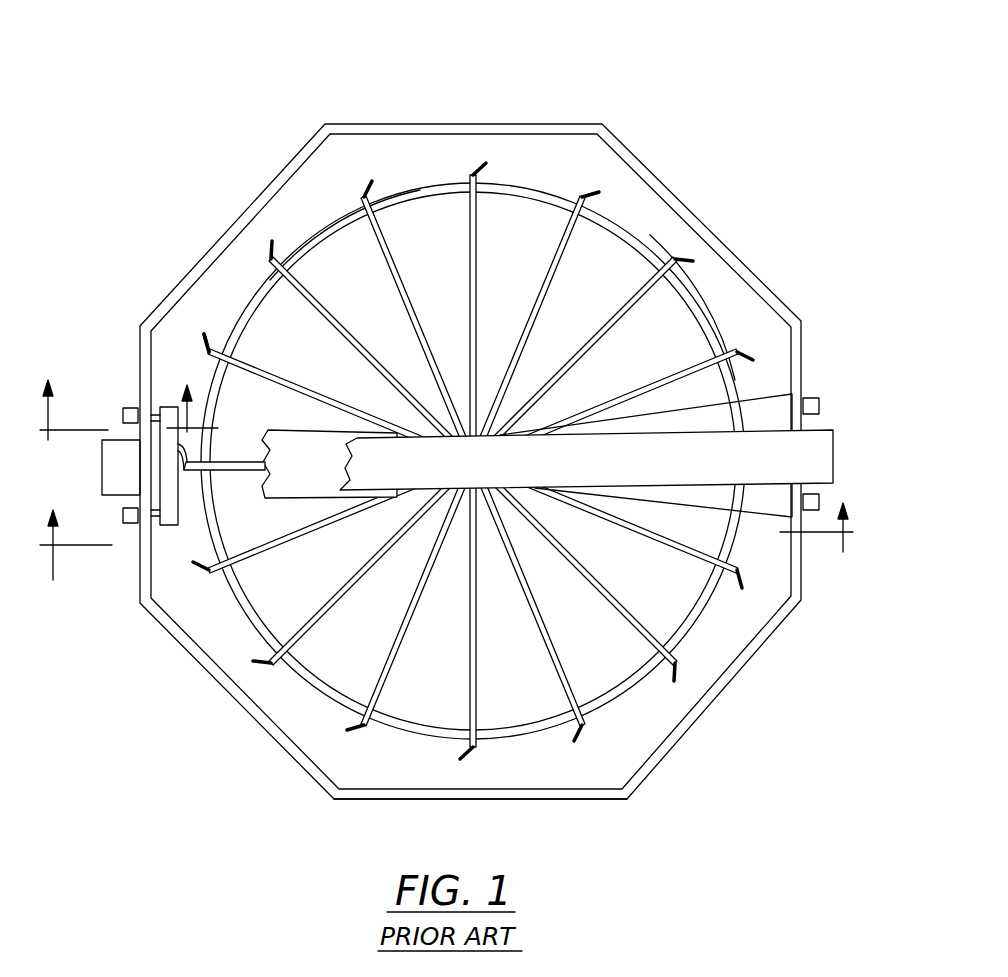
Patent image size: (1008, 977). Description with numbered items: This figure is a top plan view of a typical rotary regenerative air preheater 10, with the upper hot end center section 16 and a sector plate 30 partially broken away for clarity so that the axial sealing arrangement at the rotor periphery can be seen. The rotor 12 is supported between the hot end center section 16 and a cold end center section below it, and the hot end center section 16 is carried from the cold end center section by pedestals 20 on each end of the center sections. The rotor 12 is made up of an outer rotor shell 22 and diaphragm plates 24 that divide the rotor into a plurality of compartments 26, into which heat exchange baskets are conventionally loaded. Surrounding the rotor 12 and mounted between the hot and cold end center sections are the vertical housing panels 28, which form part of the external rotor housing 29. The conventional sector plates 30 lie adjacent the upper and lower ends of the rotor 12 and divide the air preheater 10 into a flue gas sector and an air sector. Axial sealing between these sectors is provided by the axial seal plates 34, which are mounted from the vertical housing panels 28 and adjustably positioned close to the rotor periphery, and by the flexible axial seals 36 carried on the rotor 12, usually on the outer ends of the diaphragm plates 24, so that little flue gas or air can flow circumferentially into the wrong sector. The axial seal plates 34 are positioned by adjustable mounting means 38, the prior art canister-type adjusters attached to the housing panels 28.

The air preheater 10 is at (528, 78).
The rotor 12 is at (523, 207).
The hot end center section 16 is at (817, 436).
The pedestals 20 is at (106, 467).
The outer rotor shell 22 is at (329, 224).
The diaphragm plates 24 is at (384, 242).
The compartments 26 is at (678, 328).
The vertical housing panels 28 is at (221, 239).
The external rotor housing 29 is at (313, 777).
The sector plates 30 is at (290, 488).
The axial seal plates 34 is at (198, 491).
The axial seals 36 is at (220, 327).
The adjustable mounting means 38 is at (112, 415).